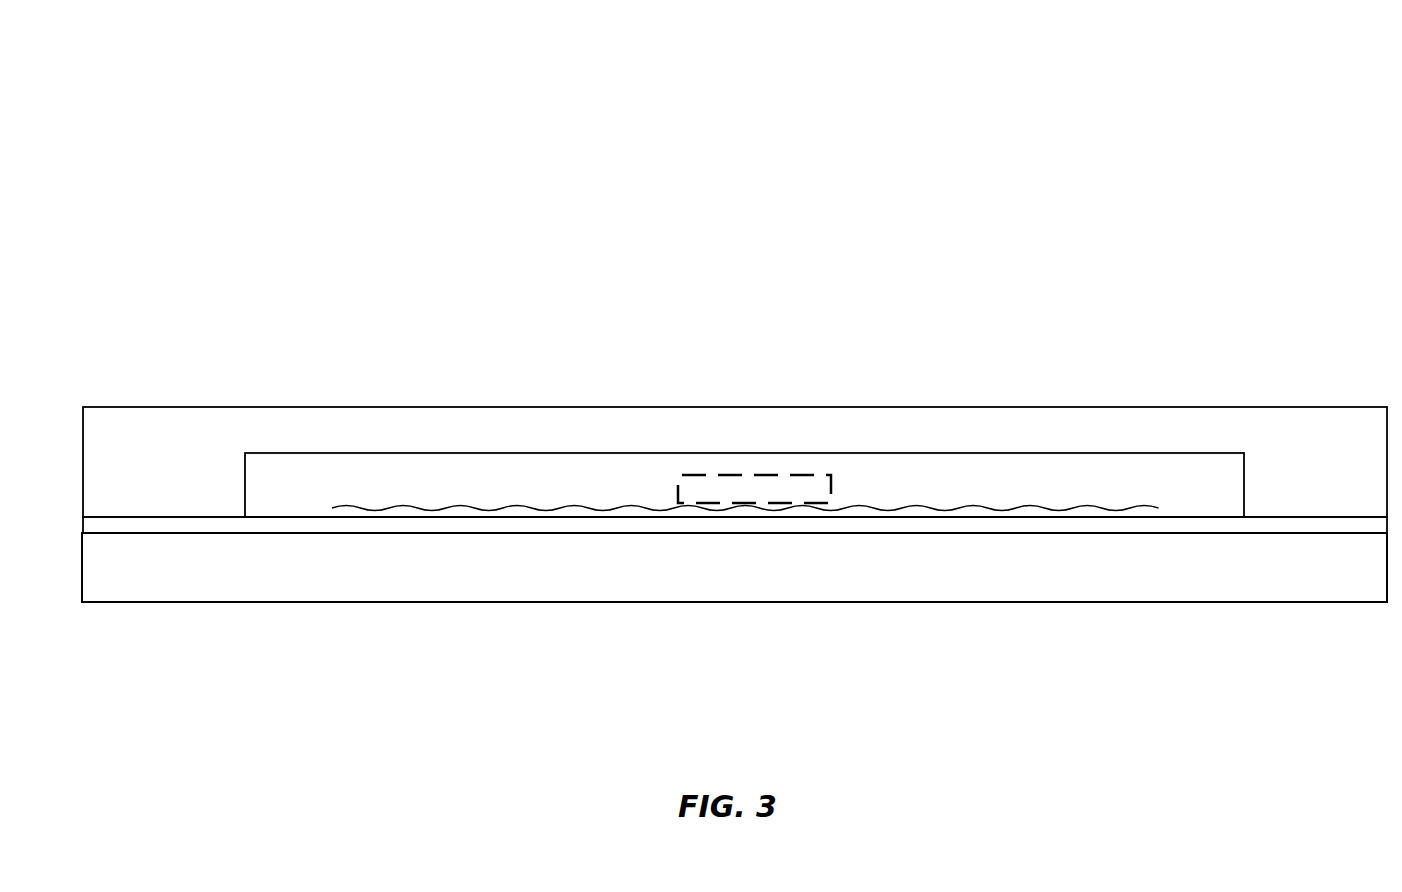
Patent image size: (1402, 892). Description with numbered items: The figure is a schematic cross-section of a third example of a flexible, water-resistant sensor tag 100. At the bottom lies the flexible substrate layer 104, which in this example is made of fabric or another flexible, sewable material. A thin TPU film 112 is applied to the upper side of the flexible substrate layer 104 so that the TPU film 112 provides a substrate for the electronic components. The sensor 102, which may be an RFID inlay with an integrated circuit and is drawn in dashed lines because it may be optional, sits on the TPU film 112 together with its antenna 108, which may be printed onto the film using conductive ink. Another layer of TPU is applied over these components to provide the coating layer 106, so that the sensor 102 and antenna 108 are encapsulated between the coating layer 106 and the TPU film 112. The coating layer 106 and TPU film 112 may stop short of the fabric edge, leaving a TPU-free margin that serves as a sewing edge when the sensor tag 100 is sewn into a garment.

The sensor tag 100 is at (130, 142).
The sensor 102 is at (752, 475).
The flexible substrate layer 104 is at (401, 565).
The coating layer 106 is at (184, 460).
The antenna 108 is at (518, 505).
The TPU film 112 is at (225, 525).